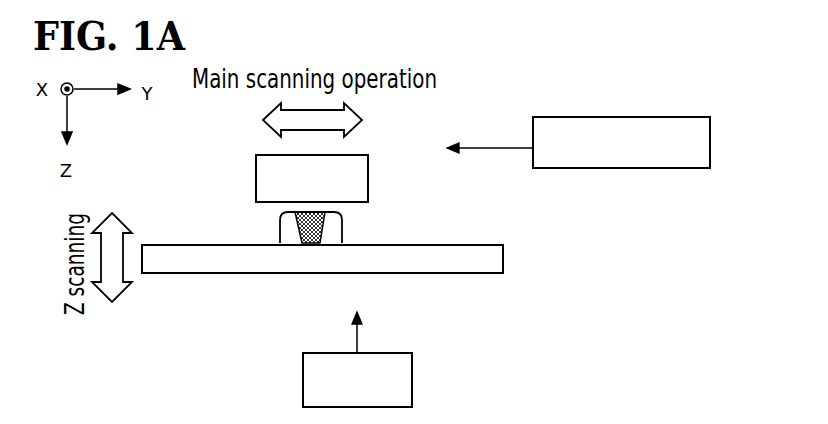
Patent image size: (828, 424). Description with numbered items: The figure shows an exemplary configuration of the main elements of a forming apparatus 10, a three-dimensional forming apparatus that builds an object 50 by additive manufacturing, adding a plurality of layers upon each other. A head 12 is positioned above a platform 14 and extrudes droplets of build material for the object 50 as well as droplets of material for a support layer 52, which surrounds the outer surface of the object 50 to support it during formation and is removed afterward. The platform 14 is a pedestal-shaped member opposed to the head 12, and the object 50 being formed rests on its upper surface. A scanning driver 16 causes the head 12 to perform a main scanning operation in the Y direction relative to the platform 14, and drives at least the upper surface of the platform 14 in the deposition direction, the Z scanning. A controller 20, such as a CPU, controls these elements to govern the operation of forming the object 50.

The forming apparatus 10 is at (717, 68).
The head 12 is at (262, 182).
The platform 14 is at (207, 265).
The scanning driver 16 is at (618, 117).
The controller 20 is at (412, 375).
The object 50 is at (330, 233).
The support layer 52 is at (282, 240).